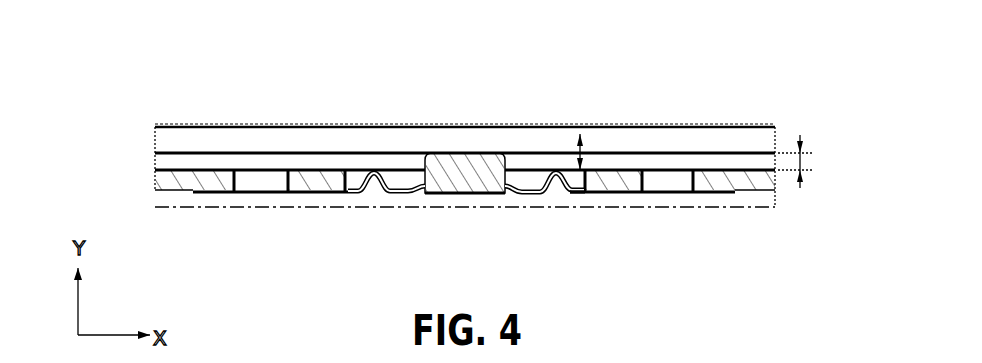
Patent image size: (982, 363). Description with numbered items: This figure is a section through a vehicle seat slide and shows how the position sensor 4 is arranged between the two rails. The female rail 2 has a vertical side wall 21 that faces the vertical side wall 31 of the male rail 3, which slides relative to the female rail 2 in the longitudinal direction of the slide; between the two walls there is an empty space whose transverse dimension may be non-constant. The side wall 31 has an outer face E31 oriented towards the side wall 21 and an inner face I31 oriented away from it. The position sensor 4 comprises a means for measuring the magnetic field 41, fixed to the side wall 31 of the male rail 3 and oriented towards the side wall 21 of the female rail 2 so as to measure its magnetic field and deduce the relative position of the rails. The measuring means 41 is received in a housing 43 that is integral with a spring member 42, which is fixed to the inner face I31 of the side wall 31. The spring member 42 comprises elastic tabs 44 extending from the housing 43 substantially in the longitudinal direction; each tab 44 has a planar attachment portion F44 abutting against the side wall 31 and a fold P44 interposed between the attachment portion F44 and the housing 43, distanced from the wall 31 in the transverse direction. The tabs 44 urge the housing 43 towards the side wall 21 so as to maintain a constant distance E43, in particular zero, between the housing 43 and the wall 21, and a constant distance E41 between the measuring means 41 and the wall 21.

The female rail 2 is at (306, 105).
The vertical side wall of the female rail 21 is at (162, 132).
The male rail 3 is at (308, 227).
The vertical side wall of the male rail 31 is at (173, 188).
The inner face I31 is at (761, 193).
The position sensor 4 is at (494, 153).
The means for measuring the magnetic field 41 is at (472, 153).
The spring member 42 is at (589, 200).
The housing 43 is at (447, 153).
The elastic tab 44 is at (350, 203).
The fold P44 is at (374, 188).
The attachment portion F44 is at (252, 194).
The distance between the measuring means and the female rail side wall E41 is at (800, 161).
The distance between the housing and the female rail side wall E43 is at (581, 145).
The outer face E31 is at (714, 160).